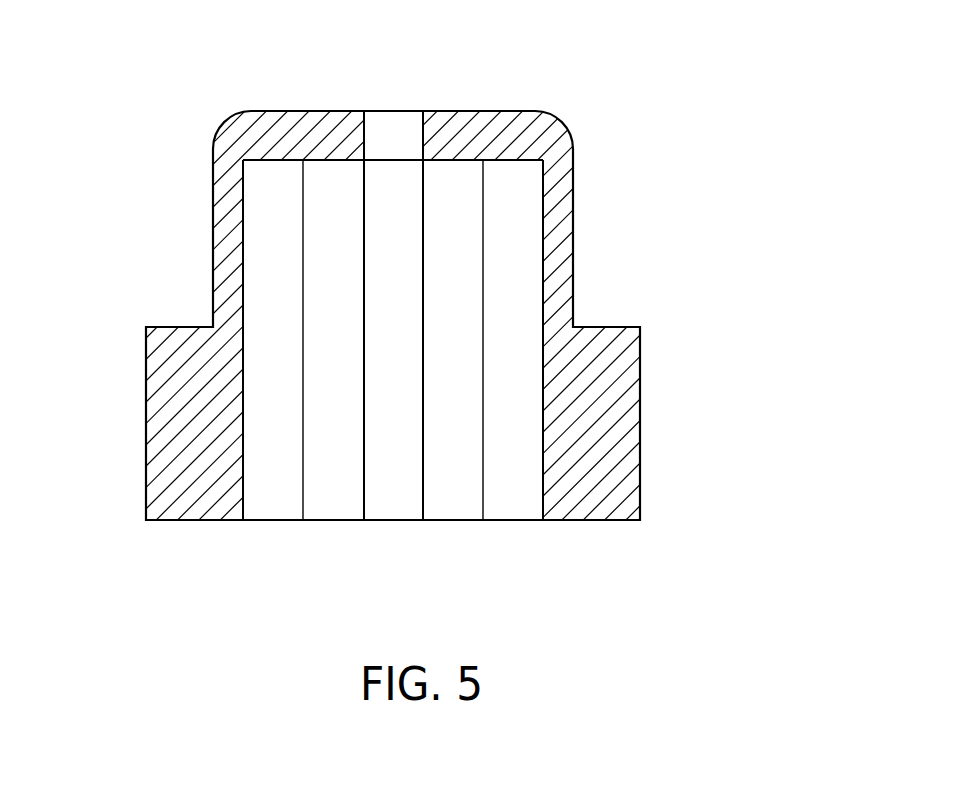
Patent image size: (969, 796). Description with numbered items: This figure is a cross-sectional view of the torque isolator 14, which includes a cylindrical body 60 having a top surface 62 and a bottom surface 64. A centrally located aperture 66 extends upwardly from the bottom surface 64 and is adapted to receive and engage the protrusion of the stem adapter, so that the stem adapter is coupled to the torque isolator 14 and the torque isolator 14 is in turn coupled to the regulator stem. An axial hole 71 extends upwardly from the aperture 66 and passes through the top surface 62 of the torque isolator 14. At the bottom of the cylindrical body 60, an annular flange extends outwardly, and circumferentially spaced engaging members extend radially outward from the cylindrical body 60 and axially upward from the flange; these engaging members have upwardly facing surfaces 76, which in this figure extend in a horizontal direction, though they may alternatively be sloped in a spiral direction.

The torque isolator 14 is at (684, 598).
The cylindrical body 60 is at (560, 235).
The top surface 62 is at (525, 110).
The bottom surface 64 is at (188, 520).
The aperture 66 is at (401, 479).
The axial hole 71 is at (392, 132).
The upwardly facing surfaces 76 is at (190, 327).